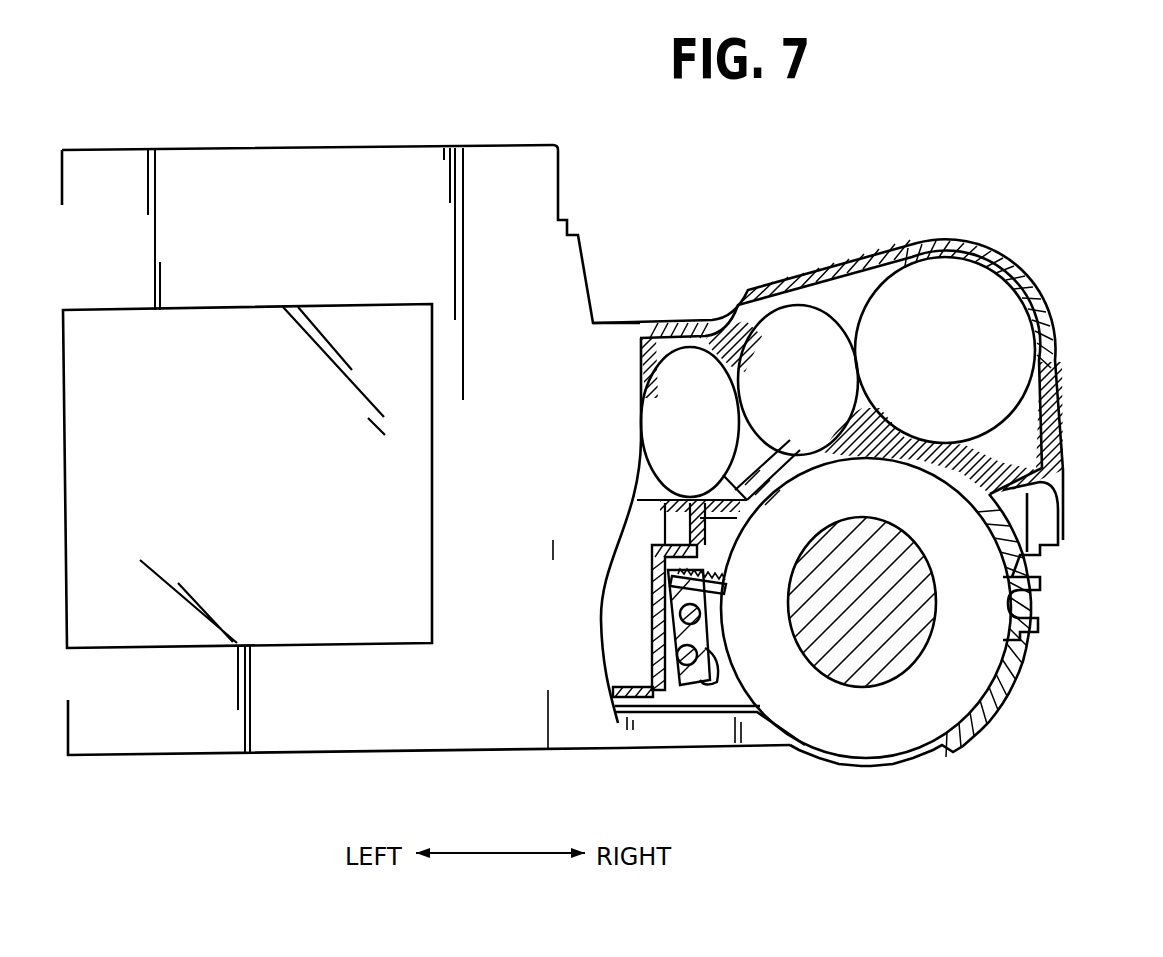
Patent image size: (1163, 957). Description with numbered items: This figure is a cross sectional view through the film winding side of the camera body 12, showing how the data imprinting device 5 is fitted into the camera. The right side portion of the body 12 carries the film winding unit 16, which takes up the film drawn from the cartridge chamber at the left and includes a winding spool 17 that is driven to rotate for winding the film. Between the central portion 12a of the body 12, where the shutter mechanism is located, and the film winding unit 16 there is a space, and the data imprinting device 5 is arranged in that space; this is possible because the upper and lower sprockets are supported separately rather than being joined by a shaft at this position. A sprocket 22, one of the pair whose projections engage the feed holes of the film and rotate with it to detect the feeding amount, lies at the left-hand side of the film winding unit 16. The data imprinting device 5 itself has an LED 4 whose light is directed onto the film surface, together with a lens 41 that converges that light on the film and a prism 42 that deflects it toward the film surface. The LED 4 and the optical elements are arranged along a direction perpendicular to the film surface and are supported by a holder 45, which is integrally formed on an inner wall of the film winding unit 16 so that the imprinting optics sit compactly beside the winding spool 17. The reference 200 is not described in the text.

The process cartridge 200 is at (1070, 380).
The body 12 is at (320, 697).
The central portion 12a is at (636, 560).
The film winding unit 16 is at (948, 676).
The winding spool 17 is at (907, 598).
The LED 4 is at (712, 578).
The lens 41 is at (655, 605).
The prism 42 is at (660, 662).
The holder 45 is at (717, 627).
The sprocket 22 is at (725, 670).
The data imprinting device 5 is at (688, 712).